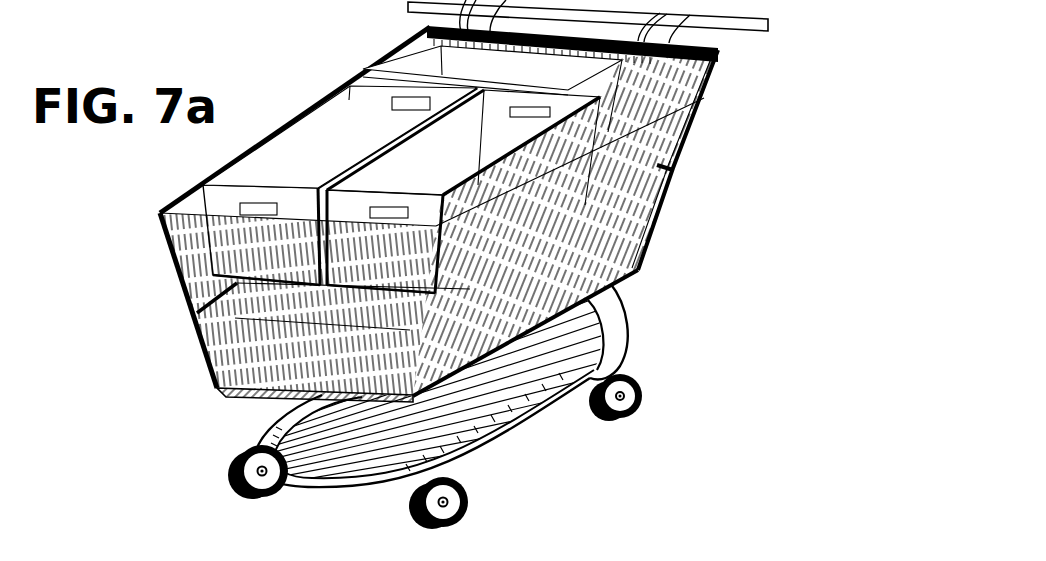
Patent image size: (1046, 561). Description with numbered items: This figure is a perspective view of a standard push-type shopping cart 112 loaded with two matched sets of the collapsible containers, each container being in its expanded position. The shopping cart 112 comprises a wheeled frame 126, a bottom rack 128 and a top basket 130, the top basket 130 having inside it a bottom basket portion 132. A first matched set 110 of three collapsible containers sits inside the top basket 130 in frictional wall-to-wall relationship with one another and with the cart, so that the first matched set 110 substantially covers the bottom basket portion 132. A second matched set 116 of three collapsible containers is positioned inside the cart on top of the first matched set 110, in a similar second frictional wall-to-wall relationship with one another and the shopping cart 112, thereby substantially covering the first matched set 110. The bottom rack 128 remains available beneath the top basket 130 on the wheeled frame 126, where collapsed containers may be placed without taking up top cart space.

The first matched set 110 is at (296, 336).
The shopping cart 112 is at (340, 89).
The second matched set 116 is at (352, 146).
The wheeled frame 126 is at (617, 340).
The bottom rack 128 is at (533, 393).
The top basket 130 is at (653, 112).
The bottom basket portion 132 is at (263, 400).